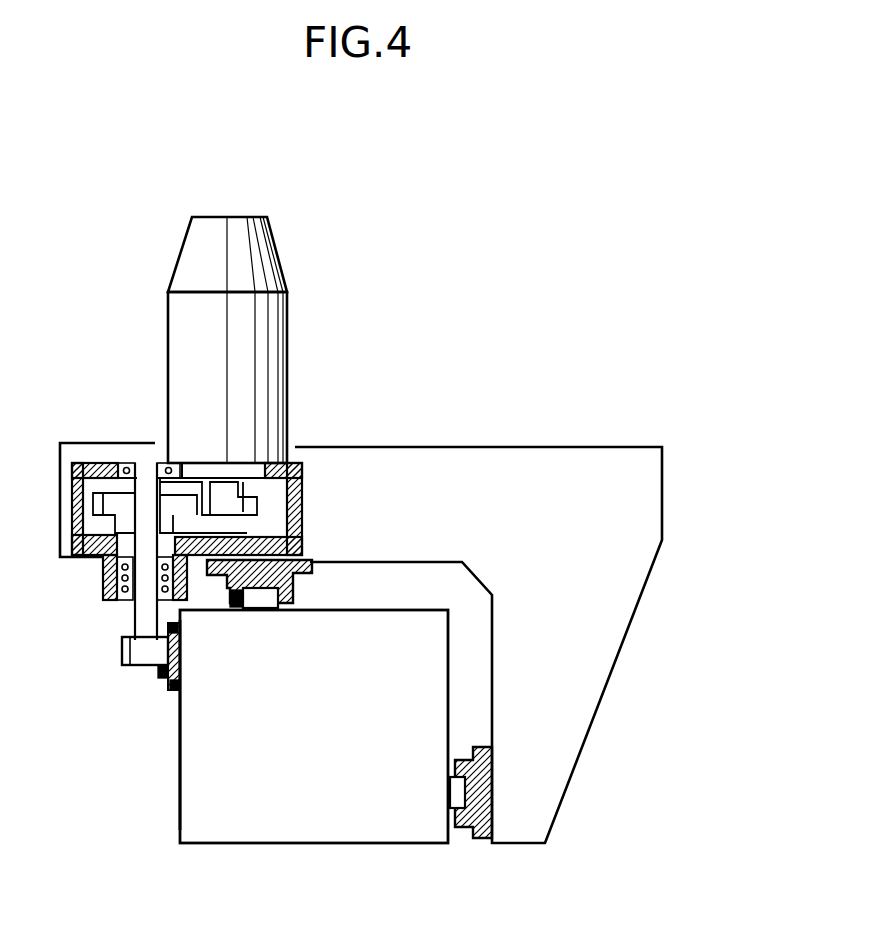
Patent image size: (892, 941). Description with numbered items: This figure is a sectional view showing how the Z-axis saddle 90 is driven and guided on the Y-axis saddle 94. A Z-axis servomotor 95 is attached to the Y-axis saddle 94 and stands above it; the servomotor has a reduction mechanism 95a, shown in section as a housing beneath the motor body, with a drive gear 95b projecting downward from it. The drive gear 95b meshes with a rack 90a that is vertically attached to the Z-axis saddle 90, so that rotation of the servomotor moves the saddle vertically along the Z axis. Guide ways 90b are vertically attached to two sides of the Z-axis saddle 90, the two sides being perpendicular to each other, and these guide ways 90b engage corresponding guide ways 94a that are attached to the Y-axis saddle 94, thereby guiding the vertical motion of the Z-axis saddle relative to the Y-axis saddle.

The Z-axis saddle 90 is at (392, 835).
The rack 90a is at (138, 725).
The guide ways 90b is at (263, 600).
The Y-axis saddle 94 is at (543, 458).
The guide ways 94a is at (307, 577).
The Z-axis servomotor 95 is at (291, 280).
The reduction mechanism 95a is at (66, 560).
The drive gear 95b is at (121, 652).